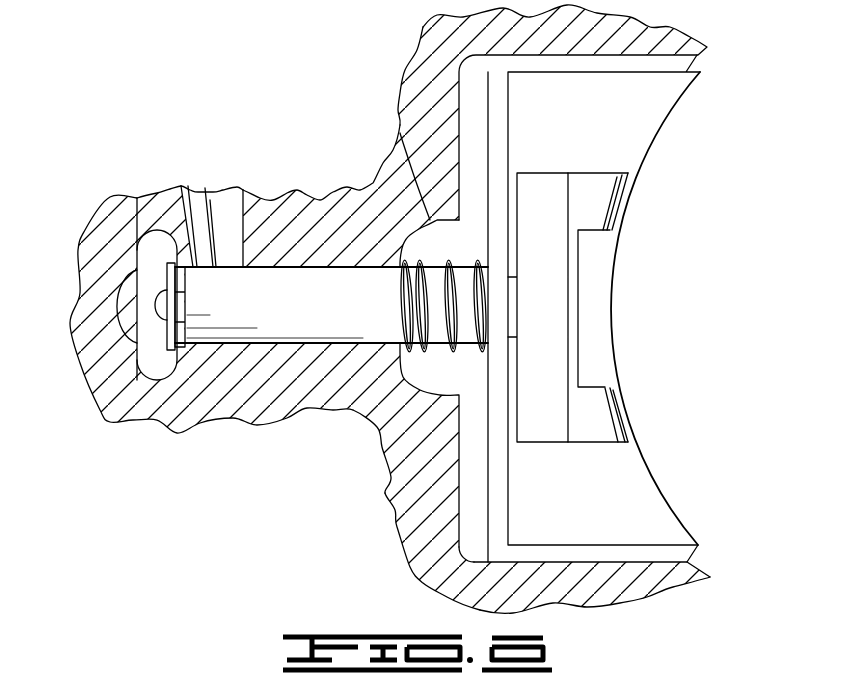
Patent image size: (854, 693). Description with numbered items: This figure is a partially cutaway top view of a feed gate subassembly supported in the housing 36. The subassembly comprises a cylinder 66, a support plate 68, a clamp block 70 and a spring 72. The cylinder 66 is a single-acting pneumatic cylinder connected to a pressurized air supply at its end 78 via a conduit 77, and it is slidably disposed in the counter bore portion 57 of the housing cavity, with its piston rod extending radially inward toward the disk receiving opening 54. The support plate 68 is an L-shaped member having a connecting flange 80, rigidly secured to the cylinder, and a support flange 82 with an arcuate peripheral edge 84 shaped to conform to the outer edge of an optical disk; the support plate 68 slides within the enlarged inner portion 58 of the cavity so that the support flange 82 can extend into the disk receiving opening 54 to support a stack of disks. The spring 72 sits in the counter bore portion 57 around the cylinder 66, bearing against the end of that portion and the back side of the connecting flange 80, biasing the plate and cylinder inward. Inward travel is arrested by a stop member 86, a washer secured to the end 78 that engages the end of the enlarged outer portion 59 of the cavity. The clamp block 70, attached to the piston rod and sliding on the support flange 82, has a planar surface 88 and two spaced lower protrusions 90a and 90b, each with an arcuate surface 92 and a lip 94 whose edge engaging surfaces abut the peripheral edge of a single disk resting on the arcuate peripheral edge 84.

The housing 36 is at (107, 210).
The disk receiving opening 54 is at (700, 573).
The counter bore portion 57 is at (407, 237).
The enlarged inner portion 58 is at (457, 137).
The enlarged outer portion 59 is at (140, 267).
The cylinder 66 is at (307, 267).
The support plate 68 is at (400, 523).
The clamp block 70 is at (543, 173).
The spring 72 is at (383, 430).
The conduit 77 is at (213, 197).
The end of the cylinder 78 is at (180, 195).
The connecting flange 80 is at (487, 90).
The support flange 82 is at (607, 547).
The arcuate peripheral edge 84 is at (615, 300).
The stop member 86 is at (167, 335).
The planar surface 88 is at (570, 400).
The lower protrusion 90a is at (588, 443).
The lower protrusion 90b is at (593, 175).
The arcuate surface 92 is at (618, 188).
The lip 94 is at (617, 208).